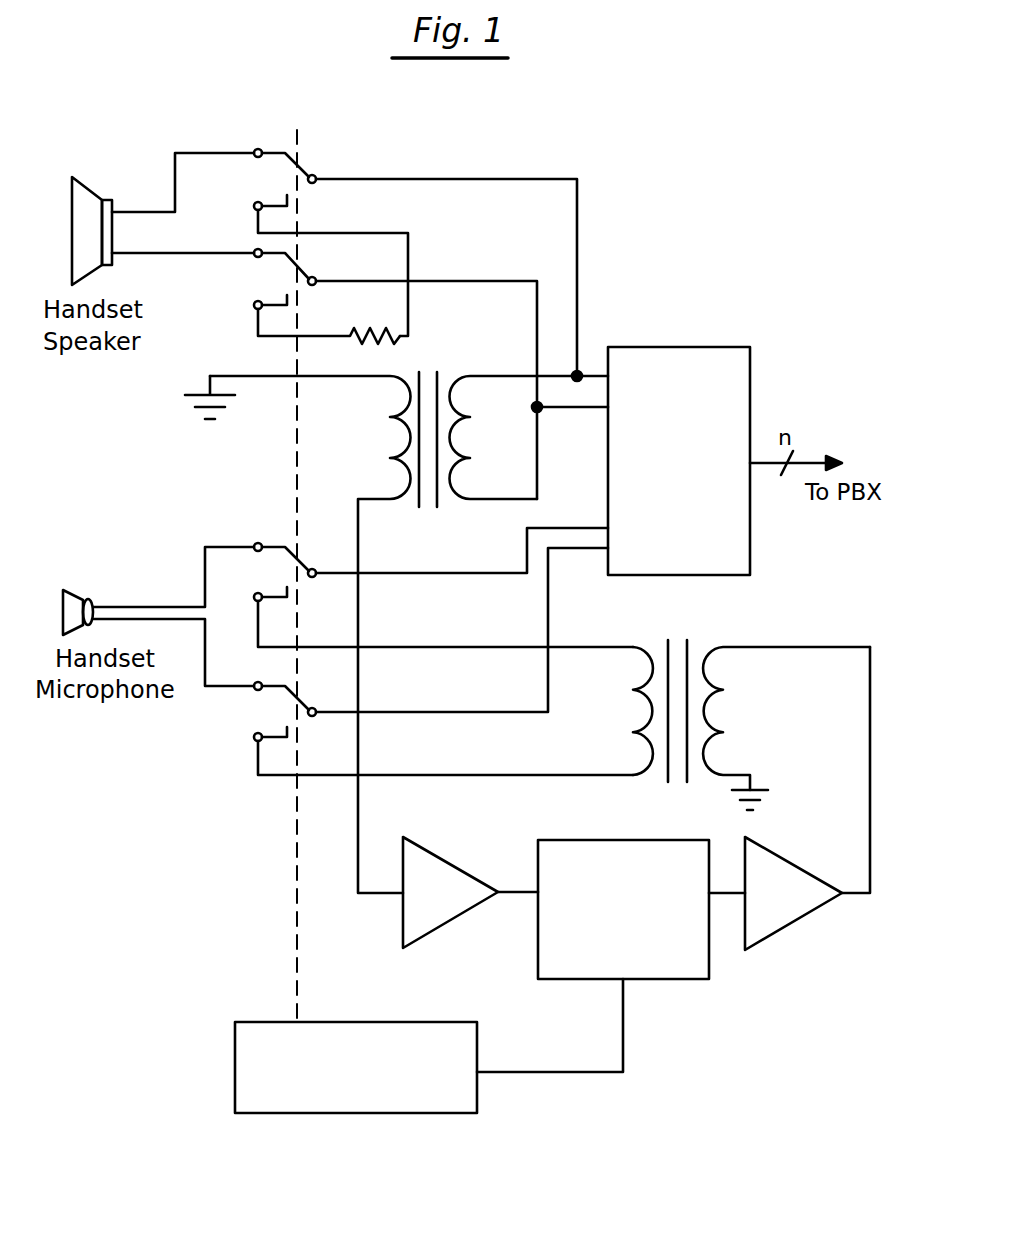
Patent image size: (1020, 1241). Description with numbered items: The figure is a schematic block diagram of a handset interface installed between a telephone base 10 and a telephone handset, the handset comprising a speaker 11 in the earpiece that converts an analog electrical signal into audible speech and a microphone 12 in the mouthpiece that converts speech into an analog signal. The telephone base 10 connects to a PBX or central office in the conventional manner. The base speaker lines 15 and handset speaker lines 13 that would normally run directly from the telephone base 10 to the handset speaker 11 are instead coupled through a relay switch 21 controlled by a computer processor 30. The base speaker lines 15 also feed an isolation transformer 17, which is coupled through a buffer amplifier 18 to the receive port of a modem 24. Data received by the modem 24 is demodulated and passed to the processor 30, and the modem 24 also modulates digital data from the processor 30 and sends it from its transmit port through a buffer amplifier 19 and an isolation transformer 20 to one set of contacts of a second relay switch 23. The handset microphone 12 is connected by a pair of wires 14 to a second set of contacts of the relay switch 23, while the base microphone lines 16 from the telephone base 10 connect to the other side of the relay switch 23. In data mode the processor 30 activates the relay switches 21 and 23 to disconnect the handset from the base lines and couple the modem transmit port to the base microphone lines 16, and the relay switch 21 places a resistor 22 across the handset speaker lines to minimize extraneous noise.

The telephone base 10 is at (668, 347).
The handset speaker 11 is at (72, 195).
The handset microphone 12 is at (72, 590).
The handset speaker lines 13 is at (148, 212).
The handset microphone lines 14 is at (205, 618).
The base speaker lines 15 is at (598, 373).
The base microphone lines 16 is at (587, 550).
The isolation transformer 17 is at (432, 372).
The buffer amplifier 18 is at (452, 858).
The buffer amplifier 19 is at (783, 930).
The isolation transformer 20 is at (678, 647).
The relay switch 21 is at (306, 186).
The resistor 22 is at (372, 340).
The relay switch 23 is at (306, 576).
The modem 24 is at (648, 982).
The computer processor 30 is at (380, 1113).